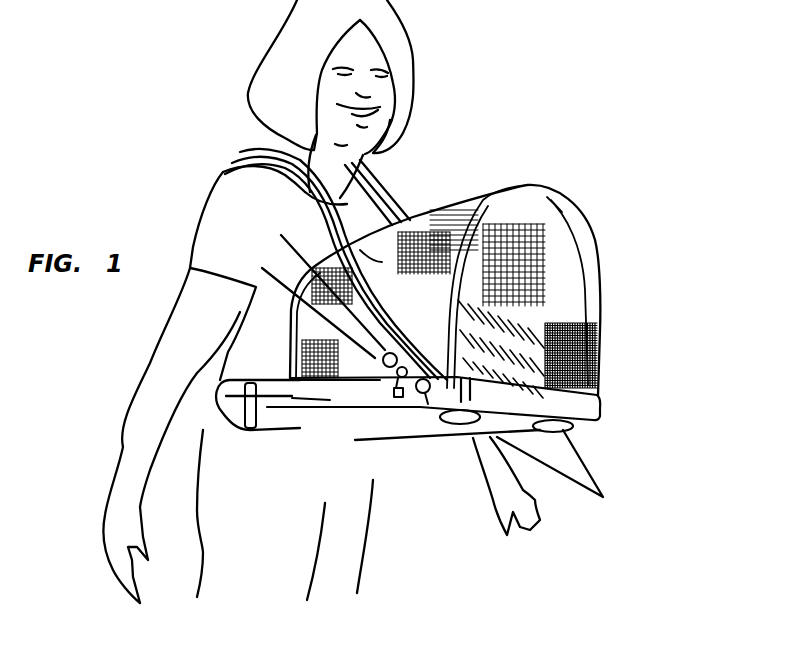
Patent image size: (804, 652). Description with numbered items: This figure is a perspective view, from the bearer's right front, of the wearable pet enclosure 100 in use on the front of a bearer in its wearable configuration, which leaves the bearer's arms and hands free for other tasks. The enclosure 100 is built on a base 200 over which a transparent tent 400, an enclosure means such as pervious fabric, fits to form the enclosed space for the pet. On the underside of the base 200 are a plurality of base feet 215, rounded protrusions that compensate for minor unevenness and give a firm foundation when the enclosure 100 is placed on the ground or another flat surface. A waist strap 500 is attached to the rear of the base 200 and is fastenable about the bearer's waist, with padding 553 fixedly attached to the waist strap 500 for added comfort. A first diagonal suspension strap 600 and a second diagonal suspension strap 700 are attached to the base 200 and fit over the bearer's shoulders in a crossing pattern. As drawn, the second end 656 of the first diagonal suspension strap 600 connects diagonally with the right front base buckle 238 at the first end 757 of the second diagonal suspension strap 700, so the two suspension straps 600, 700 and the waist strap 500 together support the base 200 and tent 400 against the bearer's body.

The enclosure 100 is at (601, 152).
The base 200 is at (605, 411).
The base feet 215 is at (541, 473).
The right front base buckle 238 is at (400, 397).
The transparent tent 400 is at (600, 347).
The waist strap 500 is at (237, 433).
The padding 553 is at (287, 424).
The first diagonal suspension strap 600 is at (372, 187).
The second end of the first diagonal suspension strap 656 is at (380, 350).
The second diagonal suspension strap 700 is at (323, 238).
The first end of the second diagonal suspension strap 757 is at (430, 388).